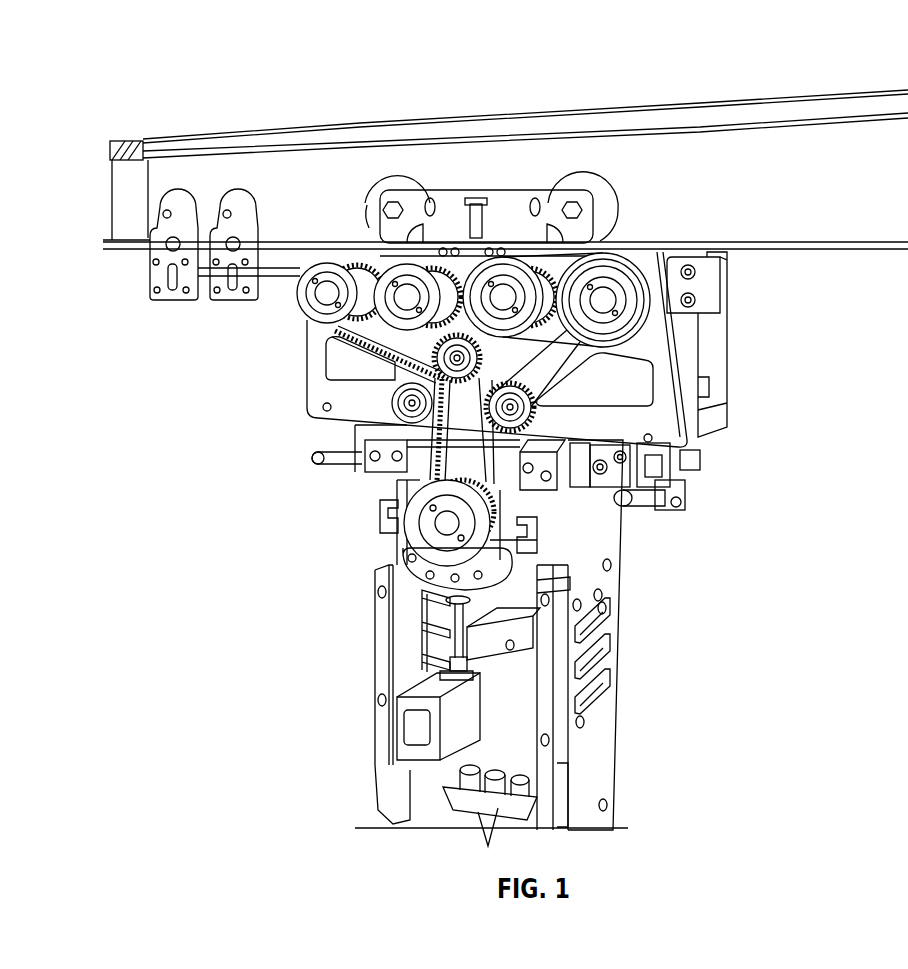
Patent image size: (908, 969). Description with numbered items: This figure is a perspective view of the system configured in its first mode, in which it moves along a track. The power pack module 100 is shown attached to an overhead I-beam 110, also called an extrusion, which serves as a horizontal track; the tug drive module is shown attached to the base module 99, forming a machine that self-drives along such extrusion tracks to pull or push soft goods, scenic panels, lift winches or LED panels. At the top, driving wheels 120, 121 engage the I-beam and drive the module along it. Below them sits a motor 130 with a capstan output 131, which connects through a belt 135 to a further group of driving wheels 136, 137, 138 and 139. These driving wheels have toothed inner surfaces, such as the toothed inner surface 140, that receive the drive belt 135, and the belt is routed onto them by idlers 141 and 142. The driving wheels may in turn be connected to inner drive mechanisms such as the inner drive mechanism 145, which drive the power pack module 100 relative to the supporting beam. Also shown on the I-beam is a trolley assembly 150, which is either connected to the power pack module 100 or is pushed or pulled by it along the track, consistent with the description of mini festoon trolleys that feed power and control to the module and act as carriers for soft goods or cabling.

The base module 99 is at (595, 575).
The power pack module 100 is at (672, 430).
The overhead I-beam 110 is at (826, 222).
The driving wheel 120 is at (383, 184).
The driving wheel 121 is at (595, 188).
The motor 130 is at (537, 493).
The capstan output 131 is at (413, 527).
The belt 135 is at (545, 470).
The driving wheel 136 is at (302, 305).
The driving wheel 137 is at (325, 358).
The driving wheel 138 is at (471, 203).
The driving wheel 139 is at (618, 273).
The toothed inner surface 140 is at (567, 280).
The idler 141 is at (408, 405).
The idler 142 is at (690, 500).
The inner drive mechanism 145 is at (668, 250).
The trolley assembly 150 is at (250, 218).